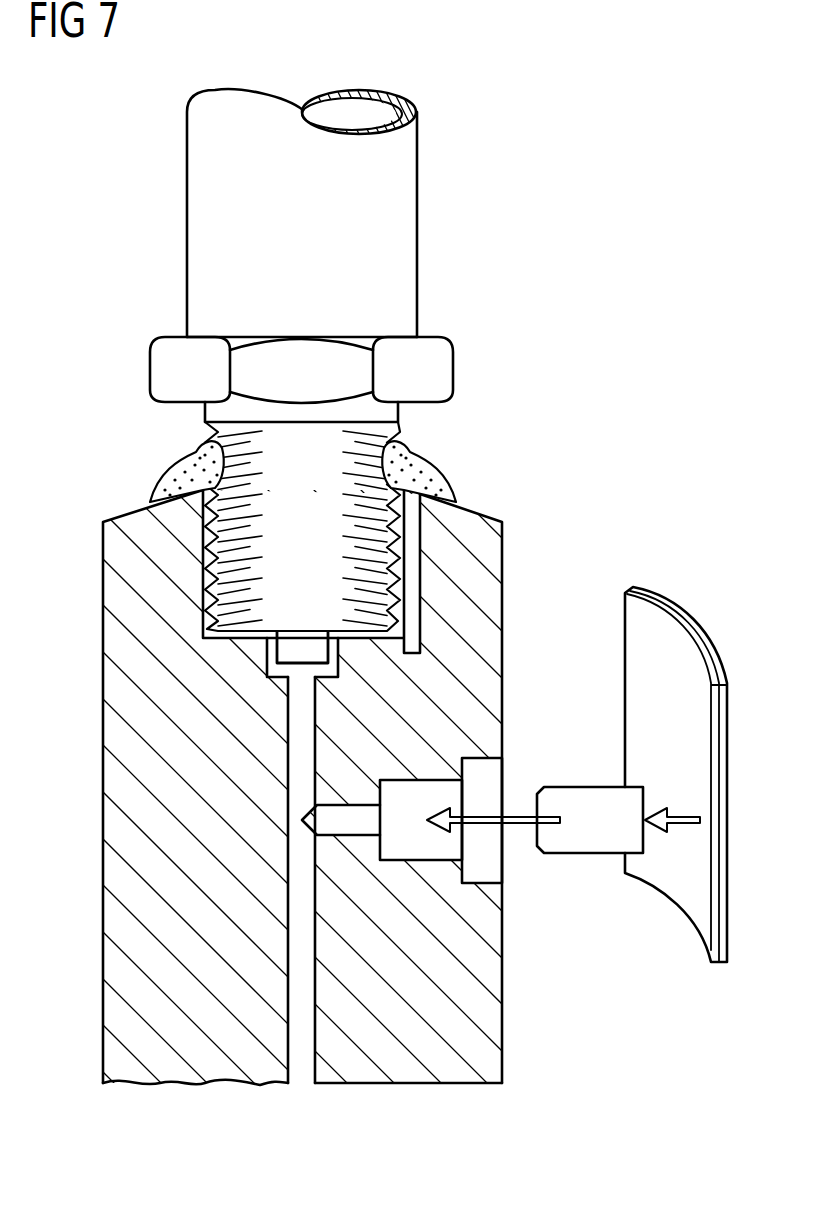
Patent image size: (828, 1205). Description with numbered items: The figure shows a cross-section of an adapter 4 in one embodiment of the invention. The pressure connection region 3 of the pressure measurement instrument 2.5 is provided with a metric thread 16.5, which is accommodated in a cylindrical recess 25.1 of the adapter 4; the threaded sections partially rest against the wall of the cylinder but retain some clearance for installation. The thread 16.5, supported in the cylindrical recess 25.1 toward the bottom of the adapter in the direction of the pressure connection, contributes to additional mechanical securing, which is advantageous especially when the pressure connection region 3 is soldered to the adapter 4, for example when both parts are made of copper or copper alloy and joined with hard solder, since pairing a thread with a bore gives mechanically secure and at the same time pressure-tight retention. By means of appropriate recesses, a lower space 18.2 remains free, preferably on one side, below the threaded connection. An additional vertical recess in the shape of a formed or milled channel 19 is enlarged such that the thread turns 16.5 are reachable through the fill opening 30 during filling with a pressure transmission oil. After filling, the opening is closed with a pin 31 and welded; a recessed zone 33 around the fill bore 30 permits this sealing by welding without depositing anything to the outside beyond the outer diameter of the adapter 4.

The pressure measurement instrument 2.5 is at (400, 230).
The pressure connection region 3 is at (292, 458).
The adapter 4 is at (115, 820).
The channel 19 is at (410, 548).
The cylindrical recess 25.1 is at (207, 552).
The metric thread 16.5 is at (202, 602).
The lower space 18.2 is at (378, 645).
The fill opening 30 is at (353, 825).
The pin 31 is at (588, 838).
The recessed zone 33 is at (490, 775).